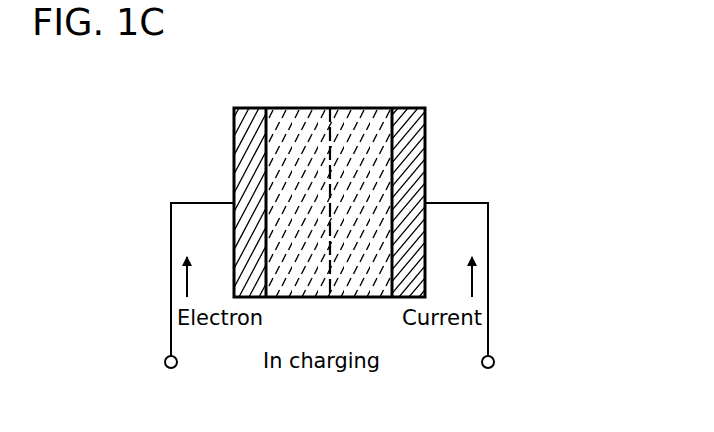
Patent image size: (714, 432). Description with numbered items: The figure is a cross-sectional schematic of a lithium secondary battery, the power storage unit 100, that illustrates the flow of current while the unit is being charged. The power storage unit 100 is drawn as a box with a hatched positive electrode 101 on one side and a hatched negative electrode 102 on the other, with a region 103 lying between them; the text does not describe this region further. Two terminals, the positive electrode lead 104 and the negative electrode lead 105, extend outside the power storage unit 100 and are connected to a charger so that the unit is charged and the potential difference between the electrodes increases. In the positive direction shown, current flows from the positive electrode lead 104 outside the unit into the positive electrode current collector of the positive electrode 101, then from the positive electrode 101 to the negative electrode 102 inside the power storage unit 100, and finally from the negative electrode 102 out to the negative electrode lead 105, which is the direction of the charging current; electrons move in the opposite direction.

The power storage unit 100 is at (437, 116).
The positive electrode 101 is at (405, 132).
The negative electrode 102 is at (243, 132).
The electrolyte / separator 103 is at (332, 132).
The positive electrode lead 104 is at (495, 361).
The negative electrode lead 105 is at (164, 361).